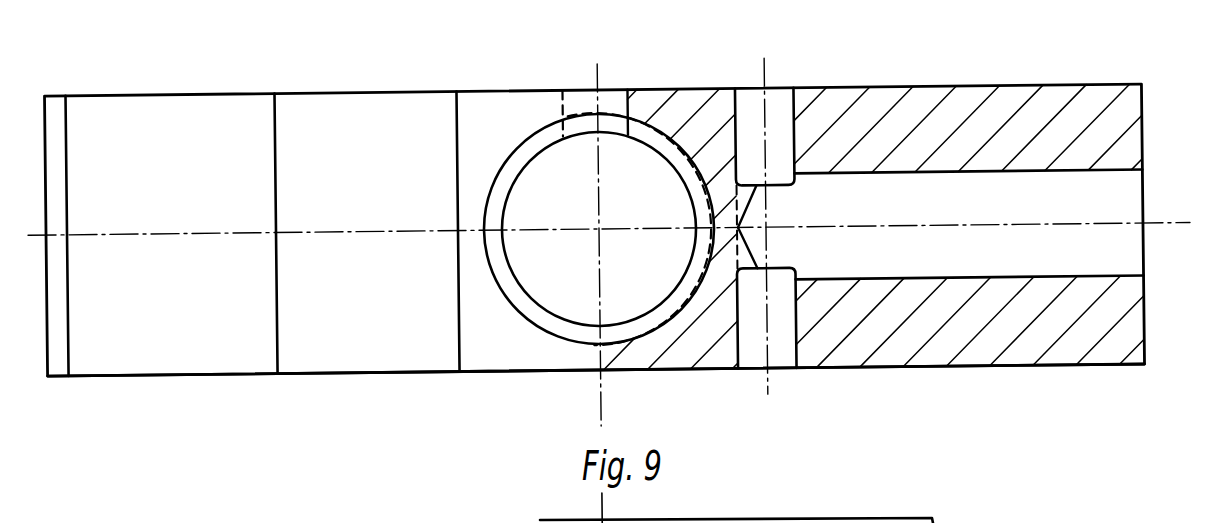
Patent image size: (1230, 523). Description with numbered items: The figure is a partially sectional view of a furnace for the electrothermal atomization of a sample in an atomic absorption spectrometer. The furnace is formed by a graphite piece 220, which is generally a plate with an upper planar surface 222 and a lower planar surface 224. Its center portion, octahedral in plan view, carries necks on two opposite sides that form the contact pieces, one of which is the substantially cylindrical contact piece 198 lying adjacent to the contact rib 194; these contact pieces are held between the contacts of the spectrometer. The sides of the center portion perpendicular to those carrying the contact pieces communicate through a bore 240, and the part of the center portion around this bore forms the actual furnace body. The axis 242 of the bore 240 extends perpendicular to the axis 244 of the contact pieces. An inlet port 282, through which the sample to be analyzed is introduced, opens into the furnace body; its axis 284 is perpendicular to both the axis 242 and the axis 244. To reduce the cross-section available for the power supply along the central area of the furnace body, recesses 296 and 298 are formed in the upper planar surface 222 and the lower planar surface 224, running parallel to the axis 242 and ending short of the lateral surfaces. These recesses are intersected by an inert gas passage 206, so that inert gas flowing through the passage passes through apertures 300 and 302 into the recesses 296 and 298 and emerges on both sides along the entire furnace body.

The contact rib 194 is at (374, 346).
The contact piece 198 is at (148, 346).
The inert gas passage 206 is at (1015, 251).
The graphite piece 220 is at (881, 86).
The upper planar surface 222 is at (725, 100).
The lower planar surface 224 is at (875, 371).
The bore 240 is at (615, 148).
The axis of the bore 242 is at (600, 232).
The axis of the contact pieces 244 is at (1050, 222).
The inlet port 282 is at (603, 92).
The axis of the inlet port 284 is at (596, 92).
The recess 296 is at (777, 102).
The recess 298 is at (782, 358).
The aperture 300 is at (777, 188).
The aperture 302 is at (782, 264).